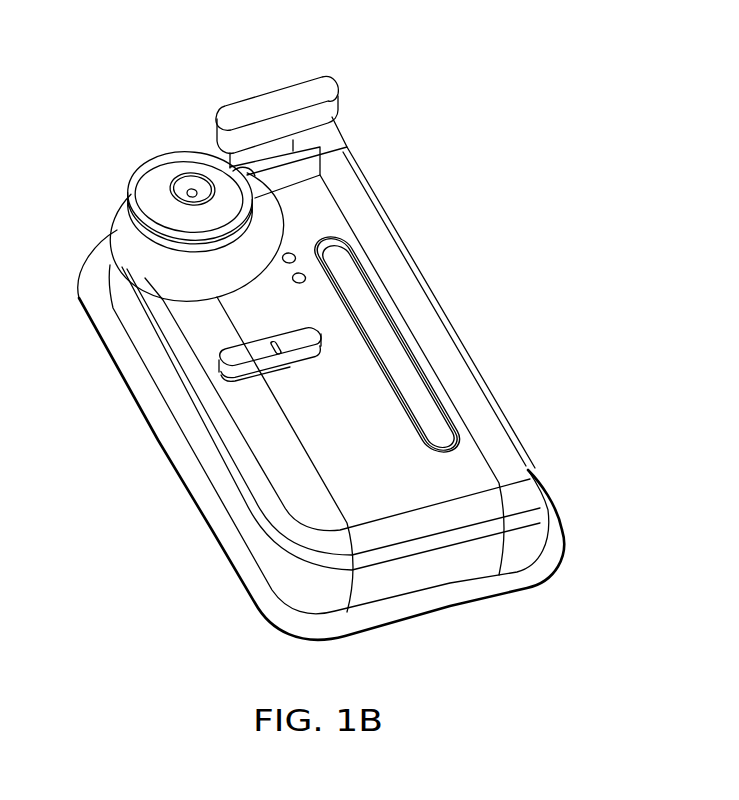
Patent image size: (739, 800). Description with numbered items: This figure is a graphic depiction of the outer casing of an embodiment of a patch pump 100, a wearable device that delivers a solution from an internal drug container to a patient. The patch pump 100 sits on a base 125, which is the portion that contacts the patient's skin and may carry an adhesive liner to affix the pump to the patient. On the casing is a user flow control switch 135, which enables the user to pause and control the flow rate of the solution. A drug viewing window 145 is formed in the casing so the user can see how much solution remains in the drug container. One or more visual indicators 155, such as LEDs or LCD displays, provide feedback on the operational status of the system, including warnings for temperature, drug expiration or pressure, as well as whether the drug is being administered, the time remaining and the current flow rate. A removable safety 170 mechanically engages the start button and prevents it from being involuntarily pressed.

The patch pump 100 is at (370, 482).
The base 125 is at (566, 538).
The user flow control switch 135 is at (218, 348).
The drug viewing window 145 is at (398, 367).
The visual indicators 155 is at (302, 273).
The removable safety 170 is at (268, 93).